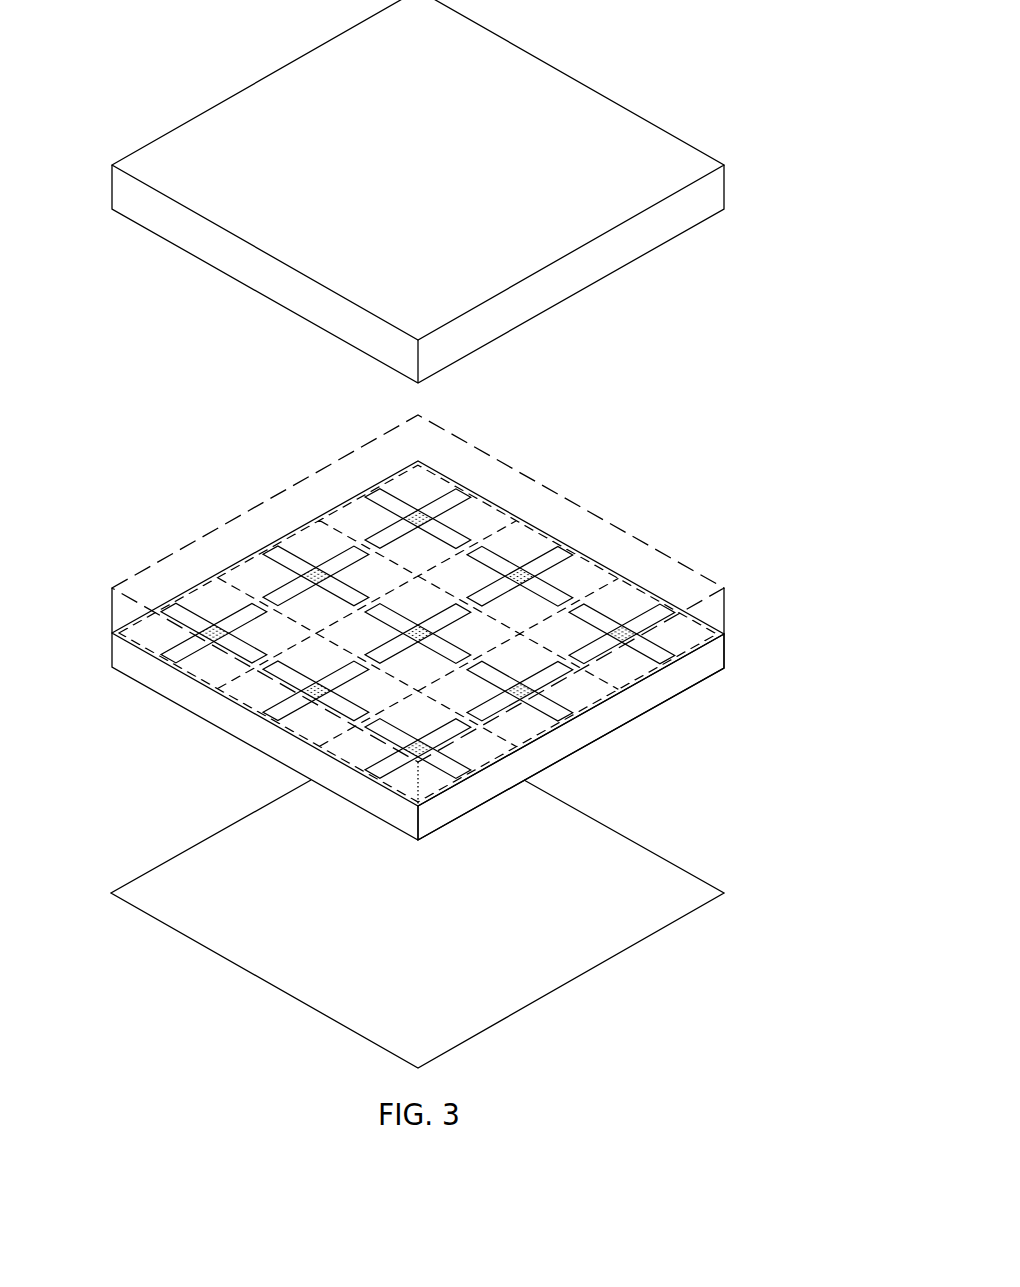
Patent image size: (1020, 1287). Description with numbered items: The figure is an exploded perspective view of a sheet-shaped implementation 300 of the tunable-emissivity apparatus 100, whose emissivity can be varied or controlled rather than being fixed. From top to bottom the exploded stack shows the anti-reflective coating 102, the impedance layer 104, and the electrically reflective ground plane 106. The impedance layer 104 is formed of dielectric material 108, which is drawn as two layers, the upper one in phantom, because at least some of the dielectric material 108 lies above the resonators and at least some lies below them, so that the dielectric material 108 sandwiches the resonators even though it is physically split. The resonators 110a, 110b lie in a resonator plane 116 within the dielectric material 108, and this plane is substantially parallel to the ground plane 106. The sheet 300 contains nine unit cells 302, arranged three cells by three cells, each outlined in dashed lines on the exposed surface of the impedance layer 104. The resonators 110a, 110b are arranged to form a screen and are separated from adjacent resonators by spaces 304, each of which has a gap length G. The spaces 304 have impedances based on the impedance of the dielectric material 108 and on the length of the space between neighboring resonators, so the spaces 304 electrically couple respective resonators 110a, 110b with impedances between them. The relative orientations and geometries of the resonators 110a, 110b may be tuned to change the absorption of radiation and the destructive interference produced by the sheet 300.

The apparatus 100 is at (632, 980).
The anti-reflective coating 102 is at (667, 147).
The impedance layer 104 is at (724, 588).
The electrically reflective ground plane 106 is at (206, 855).
The dielectric material 108 is at (120, 615).
The resonator 110a is at (317, 553).
The resonator 110b is at (416, 497).
The resonator plane 116 is at (635, 688).
The sheet-shaped implementation 300 is at (692, 1040).
The unit cell 302 is at (560, 527).
The space 304 is at (383, 594).
The gap length G is at (478, 684).